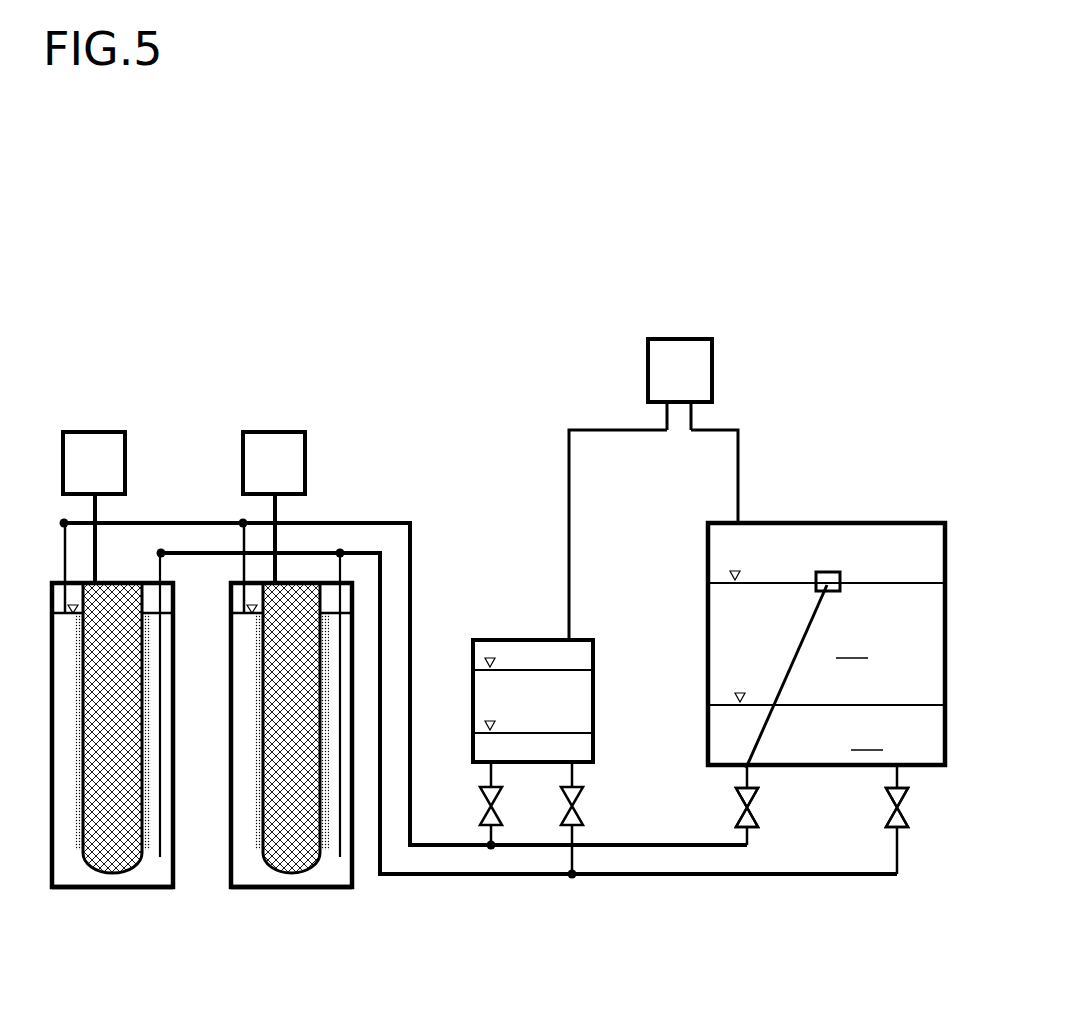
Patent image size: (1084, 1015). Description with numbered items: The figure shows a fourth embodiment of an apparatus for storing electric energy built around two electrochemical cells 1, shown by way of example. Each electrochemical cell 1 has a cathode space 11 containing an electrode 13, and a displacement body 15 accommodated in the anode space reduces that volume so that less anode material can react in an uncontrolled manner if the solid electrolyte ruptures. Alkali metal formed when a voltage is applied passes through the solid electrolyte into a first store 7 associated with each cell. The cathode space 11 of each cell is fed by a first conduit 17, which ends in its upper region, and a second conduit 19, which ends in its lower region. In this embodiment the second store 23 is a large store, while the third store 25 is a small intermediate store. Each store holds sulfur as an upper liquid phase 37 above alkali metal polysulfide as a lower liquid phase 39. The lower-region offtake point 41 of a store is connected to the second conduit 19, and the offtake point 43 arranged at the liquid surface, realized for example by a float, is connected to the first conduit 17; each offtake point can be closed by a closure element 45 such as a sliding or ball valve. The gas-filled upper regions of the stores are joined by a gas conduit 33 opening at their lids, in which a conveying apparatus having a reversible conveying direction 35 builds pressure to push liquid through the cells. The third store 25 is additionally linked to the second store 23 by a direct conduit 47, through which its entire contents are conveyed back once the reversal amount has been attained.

The electrochemical cell 1 is at (205, 760).
The first store 7 is at (100, 437).
The cathode space 11 is at (281, 912).
The electrode 13 is at (80, 850).
The displacement body 15 is at (280, 792).
The first conduit 17 is at (167, 521).
The second conduit 19 is at (395, 876).
The second store 23 is at (788, 698).
The third store 25 is at (507, 640).
The gas conduit 33 is at (578, 428).
The conveying apparatus having a reversible conveying direction 35 is at (663, 360).
The upper liquid phase 37 is at (852, 645).
The lower liquid phase 39 is at (867, 737).
The offtake point 41 is at (897, 780).
The offtake point 43 is at (745, 773).
The closure element 45 is at (563, 825).
The direct conduit 47 is at (637, 845).